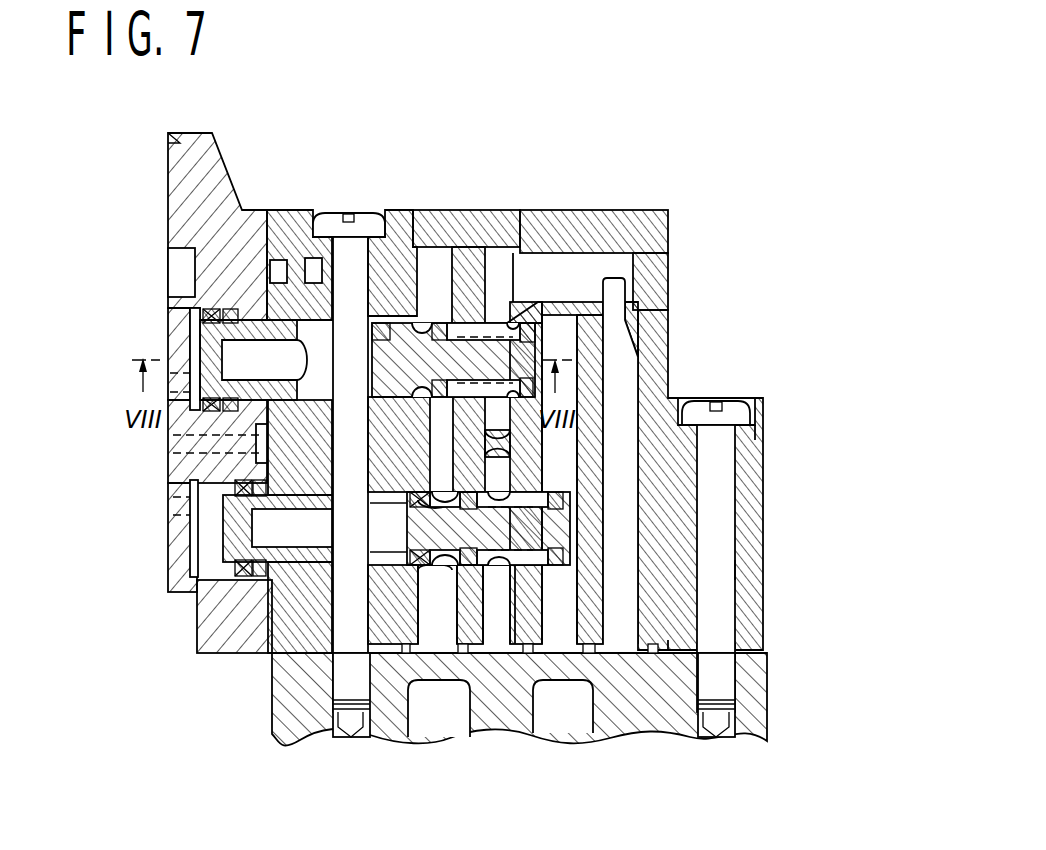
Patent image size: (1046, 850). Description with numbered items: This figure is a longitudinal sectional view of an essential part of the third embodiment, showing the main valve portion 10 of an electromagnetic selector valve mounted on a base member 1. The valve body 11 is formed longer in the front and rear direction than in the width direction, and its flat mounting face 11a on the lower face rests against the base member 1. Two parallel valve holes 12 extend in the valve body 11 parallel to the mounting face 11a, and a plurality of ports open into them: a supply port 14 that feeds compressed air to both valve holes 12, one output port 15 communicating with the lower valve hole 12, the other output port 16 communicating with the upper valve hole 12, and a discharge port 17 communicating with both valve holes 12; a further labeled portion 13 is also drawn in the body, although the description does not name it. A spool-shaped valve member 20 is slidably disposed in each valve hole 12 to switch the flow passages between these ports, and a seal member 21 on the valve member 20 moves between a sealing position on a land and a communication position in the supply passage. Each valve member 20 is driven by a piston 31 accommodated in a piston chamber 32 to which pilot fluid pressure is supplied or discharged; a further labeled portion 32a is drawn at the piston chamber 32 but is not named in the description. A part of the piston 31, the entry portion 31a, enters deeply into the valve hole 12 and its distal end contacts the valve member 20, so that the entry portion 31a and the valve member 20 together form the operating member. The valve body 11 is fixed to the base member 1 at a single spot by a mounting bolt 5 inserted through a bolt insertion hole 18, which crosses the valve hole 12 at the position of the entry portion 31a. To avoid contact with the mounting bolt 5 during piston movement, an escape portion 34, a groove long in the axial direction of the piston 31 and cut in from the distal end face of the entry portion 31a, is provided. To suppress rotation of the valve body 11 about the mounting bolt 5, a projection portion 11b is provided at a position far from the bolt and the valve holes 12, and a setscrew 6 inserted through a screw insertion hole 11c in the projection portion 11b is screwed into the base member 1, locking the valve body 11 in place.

The base member 1 is at (772, 692).
The mounting bolt 5 is at (348, 262).
The setscrew 6 is at (718, 468).
The main valve portion 10 is at (548, 185).
The valve body 11 is at (655, 337).
The mounting face 11a is at (678, 652).
The projection portion 11b is at (756, 523).
The screw insertion hole 11c is at (722, 570).
The valve hole 12 is at (442, 323).
The partition wall 13 is at (498, 645).
The supply port 14 is at (557, 633).
The output port 15 is at (486, 620).
The output port 16 is at (620, 643).
The discharge port 17 is at (432, 620).
The bolt insertion hole 18 is at (370, 262).
The valve member 20 is at (485, 357).
The seal member 21 is at (553, 492).
The piston 31 is at (200, 337).
The entry portion 31a is at (256, 315).
The piston chamber 32 is at (253, 308).
The retaining plate 32a is at (208, 525).
The escape portion 34 is at (317, 357).